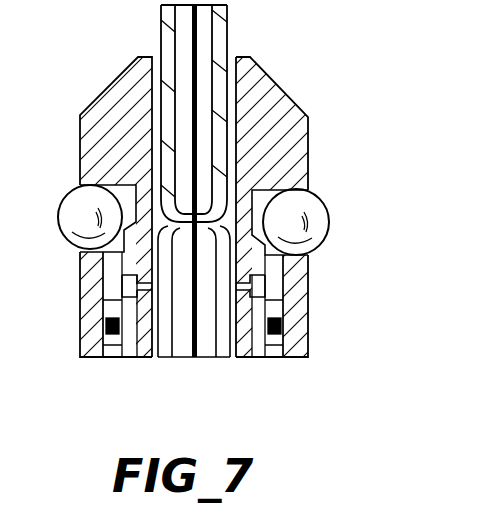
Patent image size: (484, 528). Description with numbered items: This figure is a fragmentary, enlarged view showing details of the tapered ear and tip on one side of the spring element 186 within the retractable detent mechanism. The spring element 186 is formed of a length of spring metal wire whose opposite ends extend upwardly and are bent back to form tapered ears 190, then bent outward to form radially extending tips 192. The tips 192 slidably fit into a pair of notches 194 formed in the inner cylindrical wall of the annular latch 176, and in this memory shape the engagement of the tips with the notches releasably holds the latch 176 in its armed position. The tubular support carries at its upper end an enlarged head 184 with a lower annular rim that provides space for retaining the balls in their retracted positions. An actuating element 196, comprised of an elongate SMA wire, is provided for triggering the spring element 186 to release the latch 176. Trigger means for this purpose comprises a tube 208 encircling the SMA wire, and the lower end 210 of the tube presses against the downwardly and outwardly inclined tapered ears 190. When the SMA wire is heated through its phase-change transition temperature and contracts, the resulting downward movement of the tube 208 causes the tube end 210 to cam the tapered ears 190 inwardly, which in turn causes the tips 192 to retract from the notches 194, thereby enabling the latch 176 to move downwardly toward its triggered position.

The enlarged head 184 is at (253, 90).
The tube 208 is at (168, 33).
The actuating element 196 is at (198, 335).
The tapered ears 190 is at (85, 163).
The lower end of the tube 210 is at (306, 170).
The annular latch 176 is at (110, 277).
The notches 194 is at (285, 295).
The spring element 186 is at (147, 358).
The radially extending tips 192 is at (262, 358).